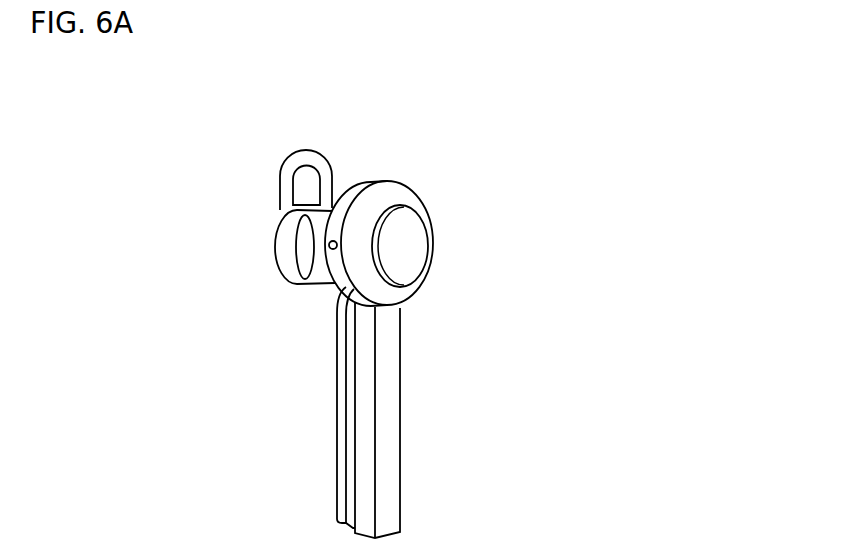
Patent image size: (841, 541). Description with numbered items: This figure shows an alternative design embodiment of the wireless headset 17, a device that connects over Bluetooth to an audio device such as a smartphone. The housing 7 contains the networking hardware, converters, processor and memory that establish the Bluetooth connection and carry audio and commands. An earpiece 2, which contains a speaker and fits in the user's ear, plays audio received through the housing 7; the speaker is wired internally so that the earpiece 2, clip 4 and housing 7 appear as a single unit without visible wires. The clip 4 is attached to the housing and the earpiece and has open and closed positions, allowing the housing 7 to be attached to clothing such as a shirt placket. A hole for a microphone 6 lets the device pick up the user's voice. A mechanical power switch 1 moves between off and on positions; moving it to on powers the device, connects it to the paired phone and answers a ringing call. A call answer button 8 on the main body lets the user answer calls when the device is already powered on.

The mechanical power switch 1 is at (330, 247).
The earpiece 2 is at (308, 222).
The clip 4 is at (336, 394).
The microphone 6 is at (362, 499).
The housing 7 is at (420, 227).
The call answer button 8 is at (397, 263).
The wireless headset 17 is at (633, 305).